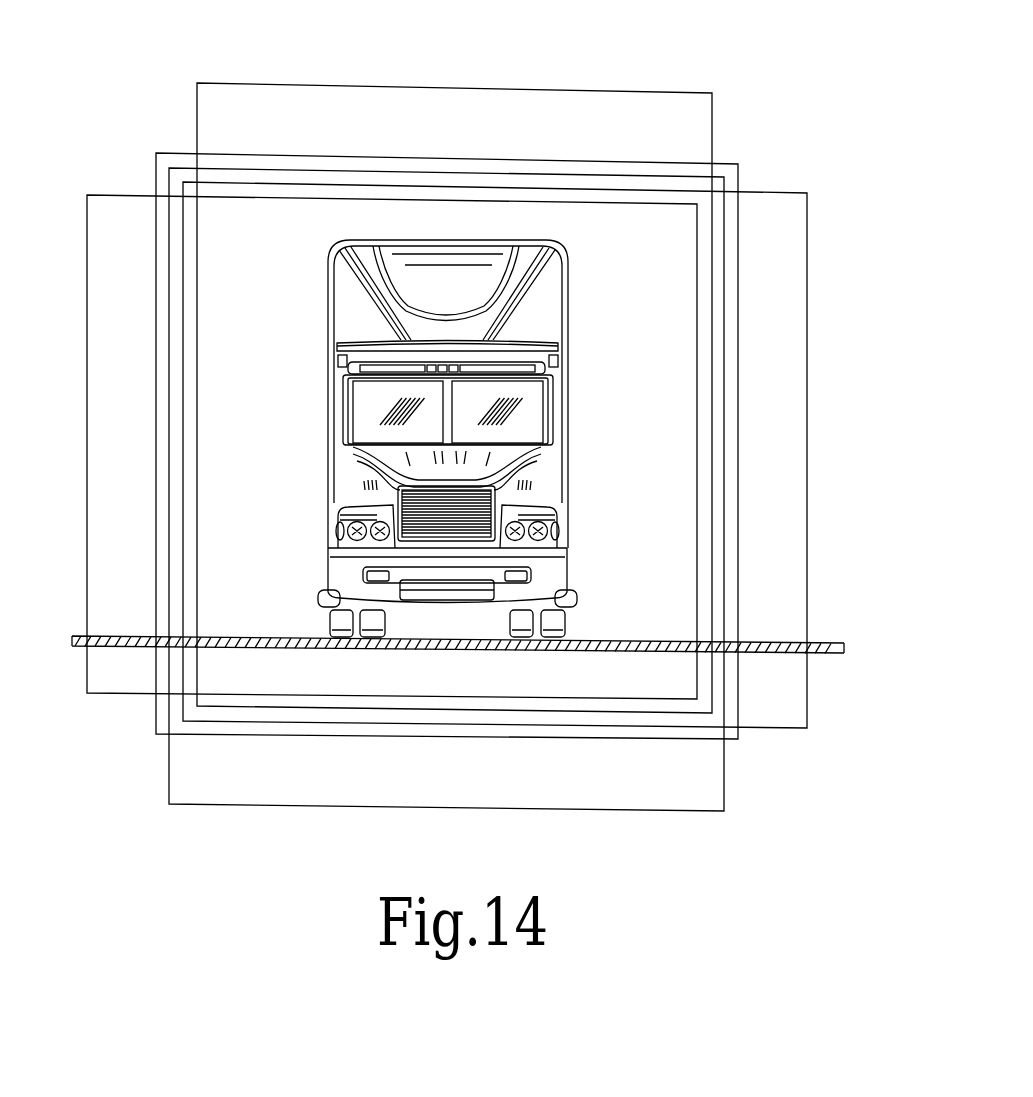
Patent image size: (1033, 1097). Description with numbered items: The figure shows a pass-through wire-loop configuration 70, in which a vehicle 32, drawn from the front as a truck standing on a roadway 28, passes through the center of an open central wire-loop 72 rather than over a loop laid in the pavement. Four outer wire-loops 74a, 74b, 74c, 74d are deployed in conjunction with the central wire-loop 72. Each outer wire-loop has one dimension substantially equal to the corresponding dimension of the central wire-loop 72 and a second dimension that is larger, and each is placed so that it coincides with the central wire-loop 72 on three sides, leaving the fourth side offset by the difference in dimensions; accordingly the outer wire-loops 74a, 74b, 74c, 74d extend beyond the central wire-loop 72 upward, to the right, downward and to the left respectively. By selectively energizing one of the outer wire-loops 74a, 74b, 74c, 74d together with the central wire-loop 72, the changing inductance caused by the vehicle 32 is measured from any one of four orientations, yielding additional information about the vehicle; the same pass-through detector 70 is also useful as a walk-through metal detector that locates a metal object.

The pass-through wire-loop configuration 70 is at (781, 97).
The central wire-loop 72 is at (739, 739).
The outer wire-loop 74a is at (607, 90).
The outer wire-loop 74b is at (808, 450).
The outer wire-loop 74c is at (340, 805).
The outer wire-loop 74d is at (86, 452).
The vehicle 32 is at (350, 310).
The roadway 28 is at (785, 654).